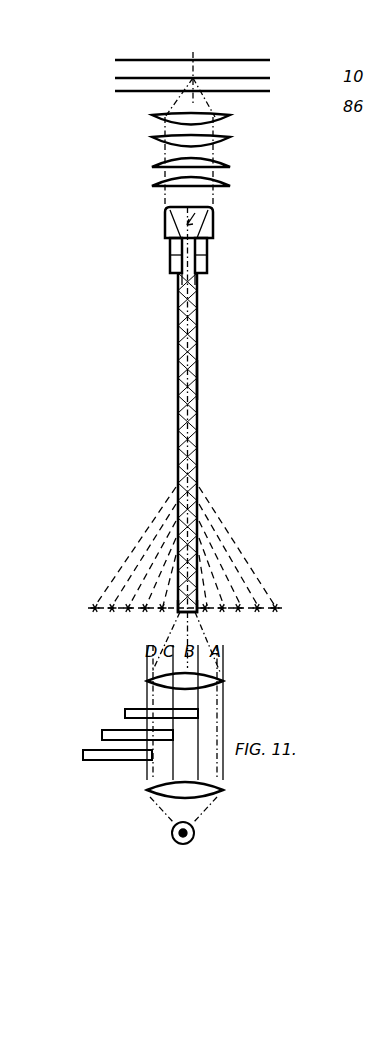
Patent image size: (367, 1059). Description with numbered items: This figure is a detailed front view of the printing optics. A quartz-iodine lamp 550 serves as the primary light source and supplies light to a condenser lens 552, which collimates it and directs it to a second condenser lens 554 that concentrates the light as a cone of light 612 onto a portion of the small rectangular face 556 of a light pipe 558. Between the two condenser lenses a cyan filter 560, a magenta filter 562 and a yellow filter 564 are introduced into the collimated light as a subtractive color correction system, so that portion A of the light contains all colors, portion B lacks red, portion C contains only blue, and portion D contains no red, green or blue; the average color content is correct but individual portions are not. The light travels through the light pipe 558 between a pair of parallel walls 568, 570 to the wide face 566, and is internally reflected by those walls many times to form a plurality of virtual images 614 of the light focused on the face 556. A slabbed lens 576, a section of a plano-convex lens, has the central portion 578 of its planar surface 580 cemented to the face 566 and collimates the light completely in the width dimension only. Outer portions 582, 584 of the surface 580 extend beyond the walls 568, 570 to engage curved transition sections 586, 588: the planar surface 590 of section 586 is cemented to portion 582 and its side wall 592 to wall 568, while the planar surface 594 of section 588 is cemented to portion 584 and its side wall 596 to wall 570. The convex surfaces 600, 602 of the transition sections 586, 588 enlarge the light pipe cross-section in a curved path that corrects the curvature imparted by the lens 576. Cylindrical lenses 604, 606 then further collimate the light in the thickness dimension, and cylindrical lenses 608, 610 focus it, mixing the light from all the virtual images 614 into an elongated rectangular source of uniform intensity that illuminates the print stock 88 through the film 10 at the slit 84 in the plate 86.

The film 10 is at (120, 78).
The plate 86 is at (120, 91).
The print stock 88 is at (183, 60).
The slit 84 is at (200, 88).
The cylindrical lens 610 is at (222, 120).
The cylindrical lens 608 is at (224, 141).
The cylindrical lens 606 is at (224, 160).
The cylindrical lens 604 is at (224, 179).
The outer portion of planar surface 582 is at (165, 212).
The slabbed lens 576 is at (212, 208).
The central portion of planar surface 578 is at (213, 226).
The planar surface 580 is at (163, 240).
The planar surface of transition section 590 is at (170, 250).
The side wall of transition section 592 is at (172, 262).
The curved transition section 586 is at (172, 270).
The convex surface 600 is at (180, 278).
The face 566 is at (183, 285).
The outer portion of planar surface 584 is at (210, 240).
The planar surface of transition section 594 is at (208, 255).
The side wall of transition section 596 is at (208, 268).
The curved transition section 588 is at (206, 278).
The convex surface 602 is at (200, 290).
The light pipe 558 is at (198, 443).
The parallel wall 568 is at (178, 352).
The parallel wall 570 is at (197, 385).
The small rectangular face 556 is at (195, 614).
The virtual images 614 is at (257, 604).
The cone of light 612 is at (175, 630).
The second condenser lens 554 is at (223, 680).
The cyan filter 560 is at (140, 712).
The magenta filter 562 is at (120, 733).
The yellow filter 564 is at (92, 760).
The condenser lens 552 is at (220, 796).
The quartz-iodine lamp 550 is at (196, 834).